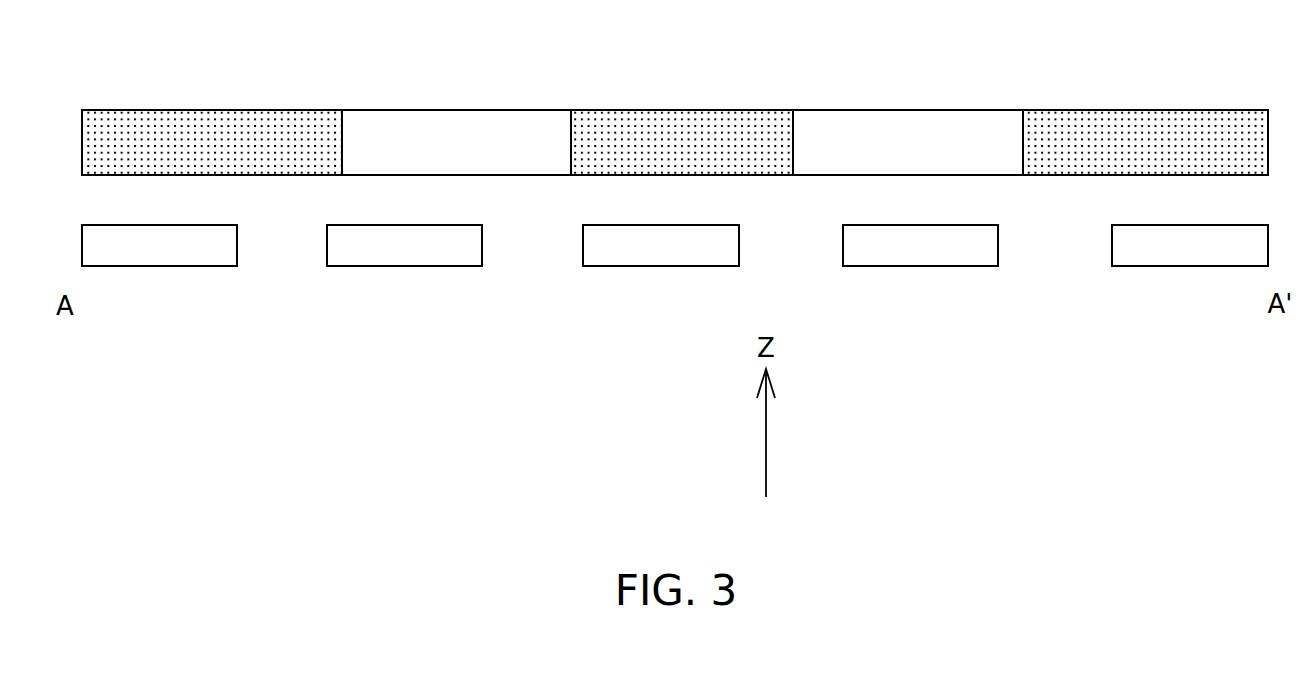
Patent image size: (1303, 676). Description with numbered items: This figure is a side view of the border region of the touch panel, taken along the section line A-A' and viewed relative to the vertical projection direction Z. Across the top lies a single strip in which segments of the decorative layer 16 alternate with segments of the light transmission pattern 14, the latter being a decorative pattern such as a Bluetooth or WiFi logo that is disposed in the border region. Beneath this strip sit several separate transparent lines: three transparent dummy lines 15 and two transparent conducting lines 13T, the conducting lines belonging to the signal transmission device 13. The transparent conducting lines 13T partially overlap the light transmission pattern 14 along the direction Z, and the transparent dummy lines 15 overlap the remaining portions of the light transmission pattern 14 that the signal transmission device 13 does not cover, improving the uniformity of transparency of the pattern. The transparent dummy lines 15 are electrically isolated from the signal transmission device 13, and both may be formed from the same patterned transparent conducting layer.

The signal transmission device 13 is at (1055, 245).
The transparent conducting line 13T is at (872, 260).
The light transmission pattern 14 is at (472, 157).
The transparent dummy line 15 is at (143, 260).
The decorative layer 16 is at (202, 138).